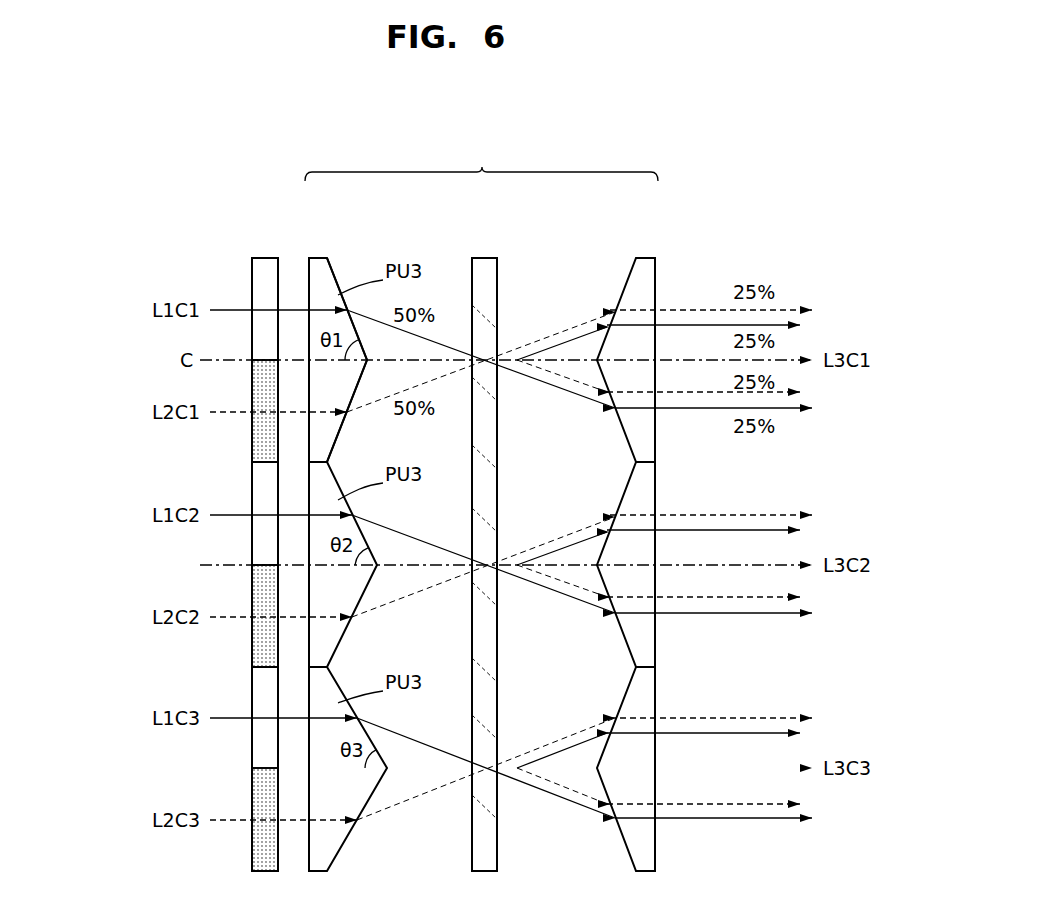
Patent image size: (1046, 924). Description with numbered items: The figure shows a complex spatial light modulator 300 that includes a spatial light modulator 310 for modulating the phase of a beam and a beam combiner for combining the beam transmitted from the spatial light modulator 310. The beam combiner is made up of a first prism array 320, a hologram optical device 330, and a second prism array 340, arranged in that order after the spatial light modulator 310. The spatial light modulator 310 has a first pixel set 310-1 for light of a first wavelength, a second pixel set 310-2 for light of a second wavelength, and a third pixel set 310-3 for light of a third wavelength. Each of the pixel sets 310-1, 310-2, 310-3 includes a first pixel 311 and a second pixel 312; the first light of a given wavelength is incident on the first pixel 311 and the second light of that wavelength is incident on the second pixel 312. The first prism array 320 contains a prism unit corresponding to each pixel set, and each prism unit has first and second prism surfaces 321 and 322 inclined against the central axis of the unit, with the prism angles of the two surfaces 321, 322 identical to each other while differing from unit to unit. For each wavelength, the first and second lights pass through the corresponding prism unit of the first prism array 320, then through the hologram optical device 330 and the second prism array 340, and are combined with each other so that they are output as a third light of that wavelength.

The complex spatial light modulator 300 is at (792, 204).
The spatial light modulator 310 is at (265, 258).
The first pixel set 310-1 is at (106, 335).
The second pixel set 310-2 is at (106, 540).
The third pixel set 310-3 is at (106, 743).
The first pixel 311 is at (255, 332).
The second pixel 312 is at (255, 385).
The first prism array 320 is at (318, 258).
The first prism surface 321 is at (335, 277).
The second prism surface 322 is at (340, 432).
The hologram optical device 330 is at (484, 258).
The second prism array 340 is at (645, 258).